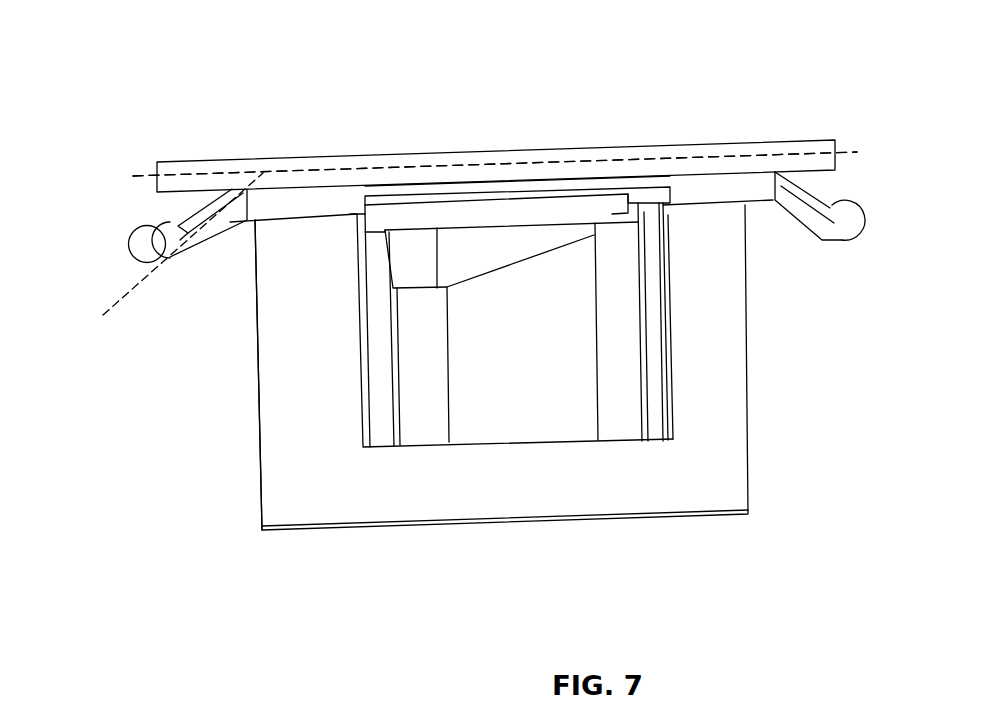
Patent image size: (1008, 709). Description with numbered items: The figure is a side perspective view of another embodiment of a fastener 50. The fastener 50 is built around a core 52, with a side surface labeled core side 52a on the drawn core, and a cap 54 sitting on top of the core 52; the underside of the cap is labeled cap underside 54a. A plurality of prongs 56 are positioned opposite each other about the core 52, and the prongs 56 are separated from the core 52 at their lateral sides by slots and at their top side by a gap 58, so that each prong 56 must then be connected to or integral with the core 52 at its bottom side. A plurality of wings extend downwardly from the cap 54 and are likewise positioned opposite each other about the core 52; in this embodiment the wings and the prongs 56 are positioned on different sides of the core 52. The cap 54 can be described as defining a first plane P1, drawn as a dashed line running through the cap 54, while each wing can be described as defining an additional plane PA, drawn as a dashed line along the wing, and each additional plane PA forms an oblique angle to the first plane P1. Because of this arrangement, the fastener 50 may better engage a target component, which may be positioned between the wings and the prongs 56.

The fastener 50 is at (137, 88).
The first plane P1 is at (143, 176).
The additional plane PA is at (115, 303).
The core 52 is at (322, 487).
The housing side wall 52a is at (258, 383).
The cap 54 is at (302, 170).
The cover plate underside 54a is at (598, 190).
The prongs 56 is at (522, 387).
The gap 58 is at (525, 213).